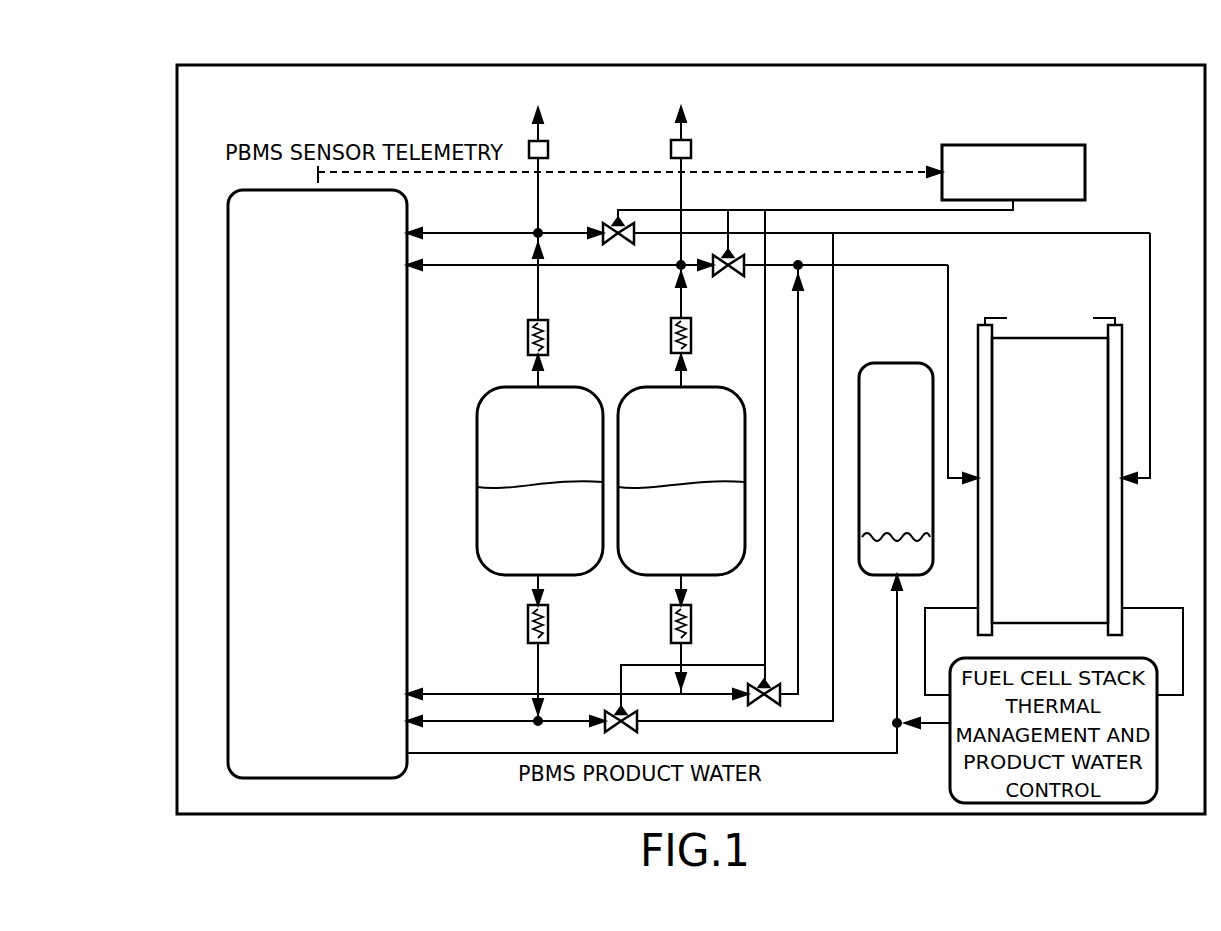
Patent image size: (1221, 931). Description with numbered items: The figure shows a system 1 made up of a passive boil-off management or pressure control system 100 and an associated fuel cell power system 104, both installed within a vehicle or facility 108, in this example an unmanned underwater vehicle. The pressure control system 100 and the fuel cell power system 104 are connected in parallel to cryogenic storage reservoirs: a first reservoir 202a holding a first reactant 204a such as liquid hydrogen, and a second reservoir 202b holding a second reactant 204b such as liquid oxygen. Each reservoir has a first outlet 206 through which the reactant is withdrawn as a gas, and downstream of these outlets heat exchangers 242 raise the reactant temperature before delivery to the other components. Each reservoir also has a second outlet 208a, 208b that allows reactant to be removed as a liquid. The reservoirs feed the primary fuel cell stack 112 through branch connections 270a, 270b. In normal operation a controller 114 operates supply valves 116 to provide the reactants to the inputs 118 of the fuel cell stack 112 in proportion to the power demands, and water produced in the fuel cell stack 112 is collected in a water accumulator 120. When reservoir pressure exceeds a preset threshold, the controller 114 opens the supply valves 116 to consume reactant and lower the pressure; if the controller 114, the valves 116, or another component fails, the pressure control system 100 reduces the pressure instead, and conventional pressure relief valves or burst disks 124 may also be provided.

The system 1 is at (780, 143).
The pressure control system 100 is at (228, 205).
The fuel cell power system 104 is at (860, 150).
The vehicle or facility 108 is at (447, 65).
The fuel cell stack 112 is at (1034, 575).
The controller 114 is at (1037, 145).
The supply valves 116 is at (605, 228).
The inputs 118 is at (975, 482).
The water accumulator 120 is at (888, 363).
The pressure relief valves and/or burst disks 124 is at (548, 148).
The first reservoir 202a is at (510, 475).
The second reservoir 202b is at (655, 467).
The first reactant 204a is at (518, 420).
The second reactant 204b is at (657, 420).
The first outlet 206 is at (535, 385).
The second outlet 208a is at (538, 578).
The second outlet 208b is at (688, 578).
The heat exchangers 242 is at (528, 325).
The branch connection 270a is at (538, 233).
The branch connection 270b is at (681, 265).